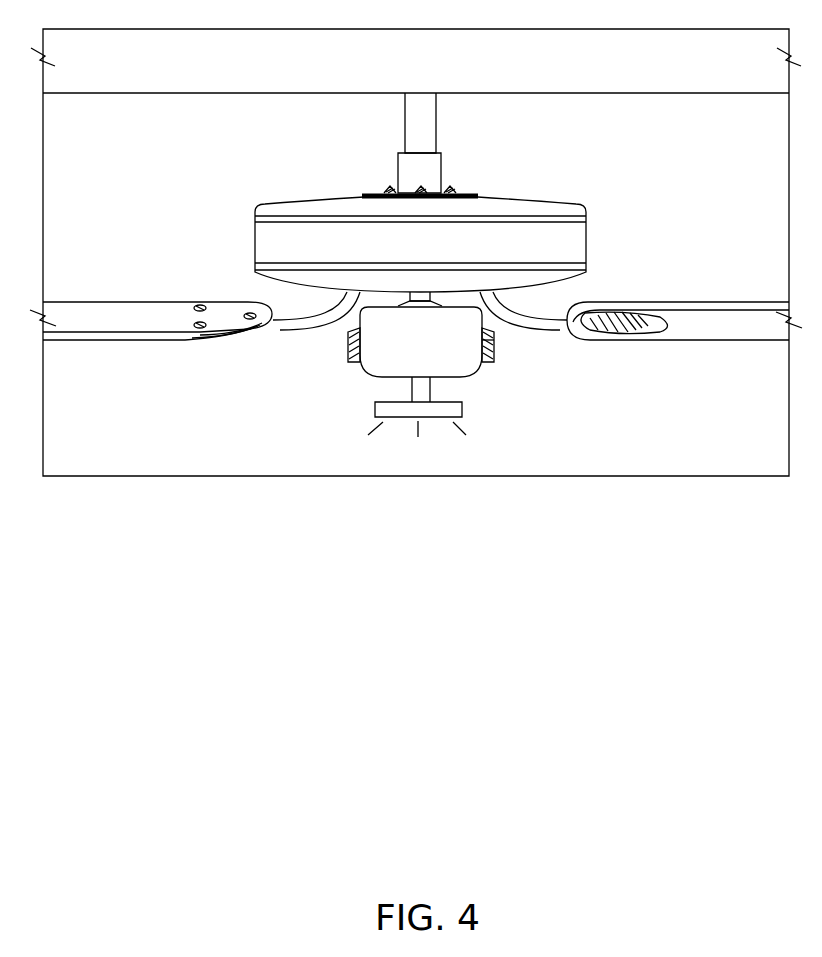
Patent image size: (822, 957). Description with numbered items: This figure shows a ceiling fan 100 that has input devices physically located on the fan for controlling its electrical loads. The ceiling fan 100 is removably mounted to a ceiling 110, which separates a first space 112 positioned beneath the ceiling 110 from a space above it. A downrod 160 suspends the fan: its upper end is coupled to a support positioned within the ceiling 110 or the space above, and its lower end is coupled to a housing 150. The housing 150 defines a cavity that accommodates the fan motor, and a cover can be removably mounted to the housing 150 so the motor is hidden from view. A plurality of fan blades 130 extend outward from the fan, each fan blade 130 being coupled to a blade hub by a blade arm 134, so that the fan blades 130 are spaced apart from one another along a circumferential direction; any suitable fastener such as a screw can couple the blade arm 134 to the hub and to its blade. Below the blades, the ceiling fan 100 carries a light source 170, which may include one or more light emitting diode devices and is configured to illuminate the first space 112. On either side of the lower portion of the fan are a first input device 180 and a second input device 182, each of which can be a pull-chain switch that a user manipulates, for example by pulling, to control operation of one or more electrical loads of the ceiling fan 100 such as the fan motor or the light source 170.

The ceiling fan 100 is at (113, 170).
The ceiling 110 is at (441, 69).
The first space 112 is at (764, 127).
The fan blades 130 is at (122, 300).
The blade arm 134 is at (276, 333).
The housing 150 is at (253, 246).
The downrod 160 is at (439, 133).
The light source 170 is at (464, 412).
The first input device 180 is at (347, 347).
The second input device 182 is at (503, 351).